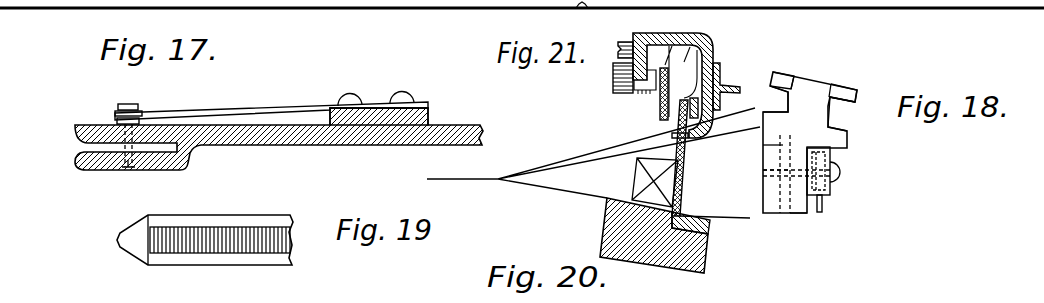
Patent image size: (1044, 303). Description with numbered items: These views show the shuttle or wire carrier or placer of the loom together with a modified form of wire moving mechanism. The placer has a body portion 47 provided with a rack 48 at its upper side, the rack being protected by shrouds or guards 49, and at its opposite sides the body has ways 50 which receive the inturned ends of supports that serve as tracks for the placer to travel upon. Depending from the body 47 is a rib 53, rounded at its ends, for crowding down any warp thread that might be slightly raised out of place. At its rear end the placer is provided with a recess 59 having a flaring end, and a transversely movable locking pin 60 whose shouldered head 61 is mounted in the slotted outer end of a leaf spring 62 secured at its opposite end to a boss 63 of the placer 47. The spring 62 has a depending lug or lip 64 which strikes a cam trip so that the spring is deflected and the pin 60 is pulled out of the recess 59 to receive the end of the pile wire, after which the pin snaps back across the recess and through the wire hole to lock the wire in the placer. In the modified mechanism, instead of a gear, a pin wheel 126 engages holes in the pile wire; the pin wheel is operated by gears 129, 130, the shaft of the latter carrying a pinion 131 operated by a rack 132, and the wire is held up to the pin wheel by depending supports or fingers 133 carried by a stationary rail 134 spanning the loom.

In FIG. 18, the body portion 47 is at (843, 143).
In FIG. 19, the rack 48 is at (265, 240).
In FIG. 18, the rack 48 is at (815, 83).
In FIG. 19, the shrouds or guards 49 is at (178, 221).
In FIG. 18, the shrouds or guards 49 is at (782, 72).
In FIG. 18, the ways 50 is at (775, 100).
In FIG. 18, the rib 53 is at (800, 208).
In FIG. 17, the recess 59 is at (93, 150).
In FIG. 17, the locking pin 60 is at (120, 146).
In FIG. 18, the locking pin 60 is at (770, 174).
In FIG. 17, the shouldered head 61 is at (133, 111).
In FIG. 18, the shouldered head 61 is at (833, 175).
In FIG. 17, the leaf spring 62 is at (282, 112).
In FIG. 17, the boss 63 is at (372, 112).
In FIG. 18, the depending lug or lip 64 is at (822, 207).
In FIG. 21, the pin wheel 126 is at (700, 120).
In FIG. 21, the gear 129 is at (660, 116).
In FIG. 21, the gear 130 is at (688, 38).
In FIG. 21, the pinion 131 is at (613, 86).
In FIG. 21, the rack 132 is at (620, 48).
In FIG. 21, the depending supports or fingers 133 is at (692, 134).
In FIG. 21, the stationary rail 134 is at (718, 63).